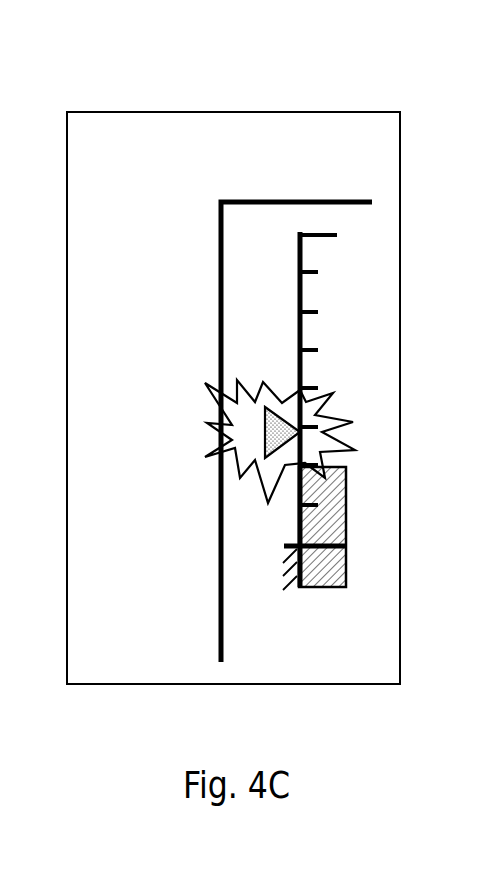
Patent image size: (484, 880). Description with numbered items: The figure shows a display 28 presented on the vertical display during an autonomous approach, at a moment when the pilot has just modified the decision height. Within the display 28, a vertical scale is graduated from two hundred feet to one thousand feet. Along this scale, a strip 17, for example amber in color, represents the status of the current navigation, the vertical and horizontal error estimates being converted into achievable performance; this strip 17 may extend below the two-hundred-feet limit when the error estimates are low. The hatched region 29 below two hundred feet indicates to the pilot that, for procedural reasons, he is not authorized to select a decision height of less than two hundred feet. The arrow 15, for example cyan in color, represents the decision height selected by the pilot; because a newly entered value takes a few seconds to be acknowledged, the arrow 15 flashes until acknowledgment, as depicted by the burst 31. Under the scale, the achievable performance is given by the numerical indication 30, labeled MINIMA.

The display 28 is at (215, 112).
The numerical indication 30 is at (308, 656).
The strip 17 is at (347, 505).
The hatched region 29 is at (281, 573).
The flashing of the arrow 31 is at (246, 392).
The arrow 15 is at (263, 432).